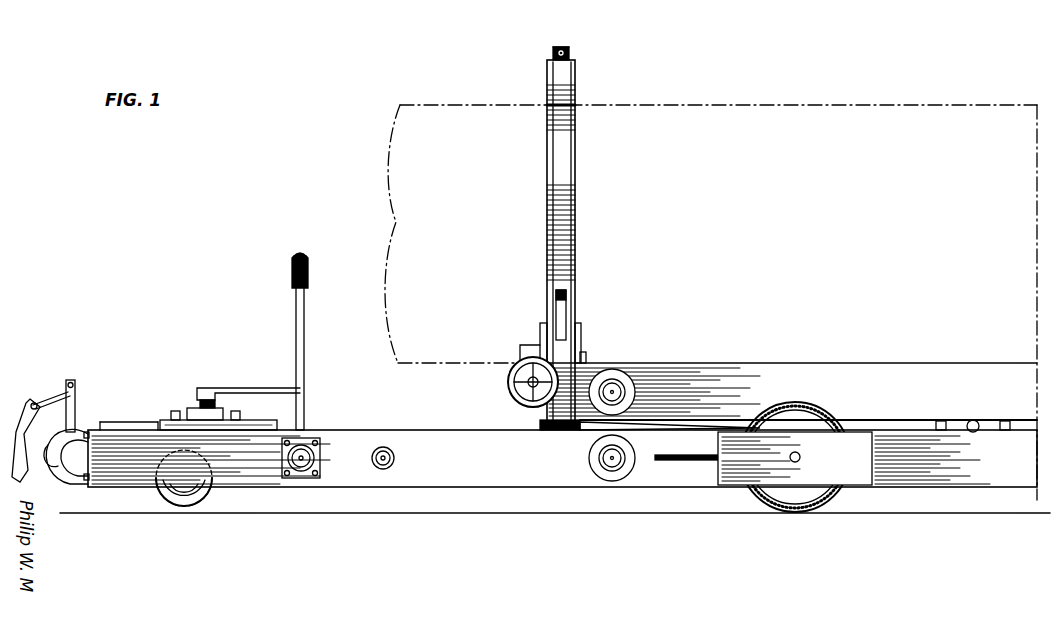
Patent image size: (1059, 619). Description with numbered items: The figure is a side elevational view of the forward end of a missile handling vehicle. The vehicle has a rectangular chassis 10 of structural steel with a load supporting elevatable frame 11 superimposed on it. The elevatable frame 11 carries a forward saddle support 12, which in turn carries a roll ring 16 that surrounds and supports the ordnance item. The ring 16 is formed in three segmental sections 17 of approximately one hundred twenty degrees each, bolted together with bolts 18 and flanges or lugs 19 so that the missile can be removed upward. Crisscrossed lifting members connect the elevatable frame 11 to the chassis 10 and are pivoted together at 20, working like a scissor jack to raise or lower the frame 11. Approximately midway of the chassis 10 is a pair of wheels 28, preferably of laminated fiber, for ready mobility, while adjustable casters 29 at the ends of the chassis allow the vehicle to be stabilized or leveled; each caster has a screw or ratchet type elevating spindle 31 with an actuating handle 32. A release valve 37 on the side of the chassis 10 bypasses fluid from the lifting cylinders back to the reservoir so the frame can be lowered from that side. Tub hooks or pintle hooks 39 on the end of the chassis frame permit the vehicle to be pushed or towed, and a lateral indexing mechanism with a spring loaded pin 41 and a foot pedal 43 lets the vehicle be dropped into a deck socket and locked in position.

The chassis 10 is at (468, 490).
The elevatable frame 11 is at (735, 360).
The forward saddle support 12 is at (547, 332).
The ring 16 is at (580, 212).
The segmental sections 17 is at (565, 163).
The bolts 18 is at (572, 53).
The flanges or lugs 19 is at (566, 46).
The pivot 20 is at (974, 420).
The wheels 28 is at (774, 500).
The adjustable casters 29 is at (183, 500).
The elevating spindle 31 is at (200, 408).
The actuating handle 32 is at (243, 388).
The release valve 37 is at (382, 470).
The tub hooks or pintle hooks 39 is at (80, 432).
The spring loaded pin 41 is at (72, 380).
The foot pedal 43 is at (24, 412).